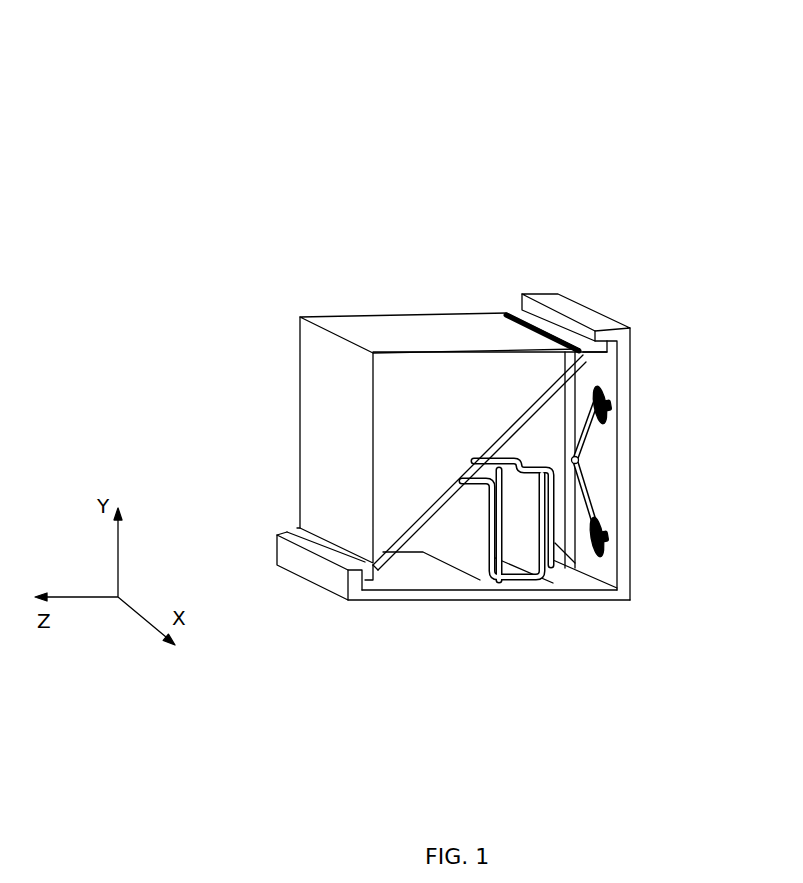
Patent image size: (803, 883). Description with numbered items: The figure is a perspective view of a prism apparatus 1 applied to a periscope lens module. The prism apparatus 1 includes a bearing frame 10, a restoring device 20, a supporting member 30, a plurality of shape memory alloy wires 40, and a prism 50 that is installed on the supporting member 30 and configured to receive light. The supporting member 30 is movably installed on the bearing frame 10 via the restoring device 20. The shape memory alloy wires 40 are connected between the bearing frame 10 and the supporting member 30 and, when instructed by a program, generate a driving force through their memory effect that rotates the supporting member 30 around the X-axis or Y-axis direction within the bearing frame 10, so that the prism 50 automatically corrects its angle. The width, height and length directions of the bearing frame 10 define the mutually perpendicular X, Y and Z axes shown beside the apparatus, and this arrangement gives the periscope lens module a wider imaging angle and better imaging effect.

The prism apparatus 1 is at (500, 62).
The bearing frame 10 is at (603, 555).
The restoring device 20 is at (483, 583).
The supporting member 30 is at (400, 552).
The shape memory alloy wires 40 is at (583, 442).
The prism 50 is at (482, 330).